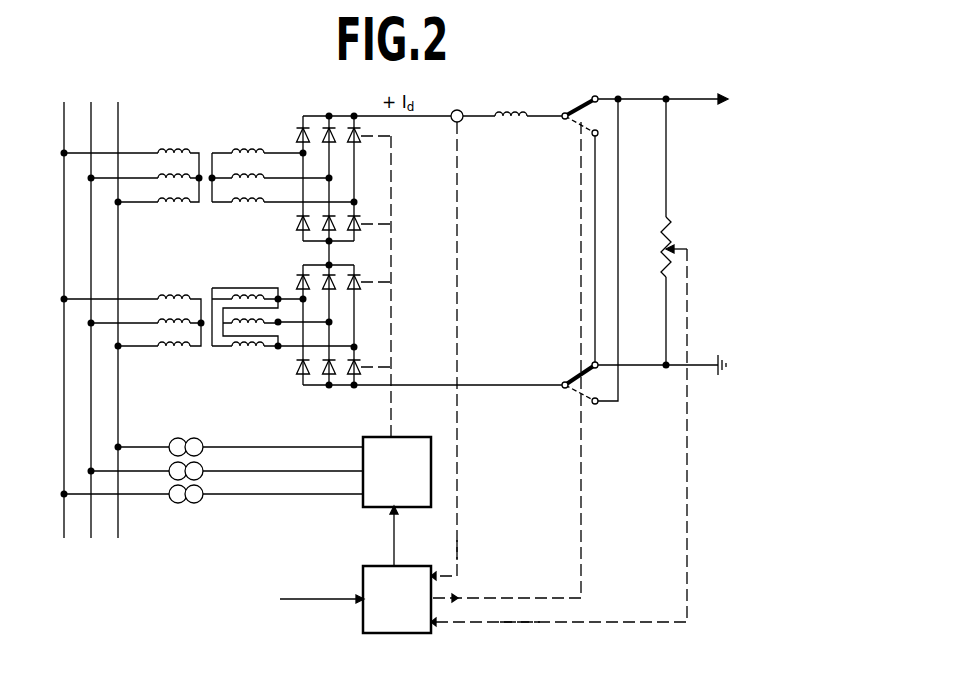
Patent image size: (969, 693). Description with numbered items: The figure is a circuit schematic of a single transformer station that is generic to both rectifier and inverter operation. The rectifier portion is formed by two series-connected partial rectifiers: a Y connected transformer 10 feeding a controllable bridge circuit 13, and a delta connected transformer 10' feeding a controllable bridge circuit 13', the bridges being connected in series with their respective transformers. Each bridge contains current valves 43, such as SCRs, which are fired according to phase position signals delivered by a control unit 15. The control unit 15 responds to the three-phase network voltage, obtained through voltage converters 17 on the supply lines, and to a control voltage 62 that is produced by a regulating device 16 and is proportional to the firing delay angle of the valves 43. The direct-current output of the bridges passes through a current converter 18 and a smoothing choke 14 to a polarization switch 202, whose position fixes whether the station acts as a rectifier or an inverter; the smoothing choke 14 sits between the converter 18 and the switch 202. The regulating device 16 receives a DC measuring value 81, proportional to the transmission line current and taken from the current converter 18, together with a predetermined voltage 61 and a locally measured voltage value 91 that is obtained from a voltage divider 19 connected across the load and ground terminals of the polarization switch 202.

The Y connected transformer 10 is at (209, 164).
The delta connected transformer 10' is at (209, 308).
The controllable bridge circuit 13 is at (329, 167).
The controllable bridge circuit 13' is at (431, 328).
The smoothing choke 14 is at (498, 110).
The control unit 15 is at (397, 472).
The regulating device 16 is at (397, 599).
The voltage converters 17 is at (202, 440).
The current converter 18 is at (450, 111).
The voltage divider 19 is at (660, 244).
The current valves 43 is at (308, 144).
The predetermined voltage 61 is at (309, 599).
The control voltage 62 is at (394, 545).
The DC measuring value 81 is at (457, 532).
The locally measured voltage value 91 is at (520, 623).
The polarization switch 202 is at (578, 108).